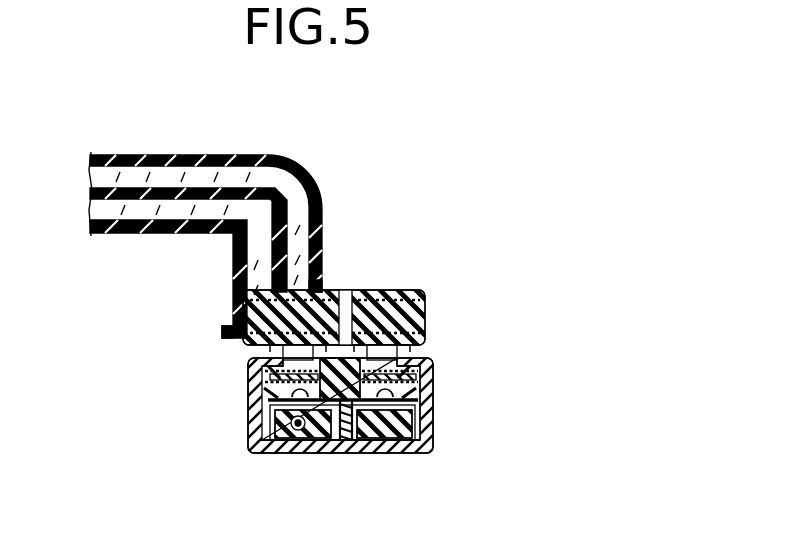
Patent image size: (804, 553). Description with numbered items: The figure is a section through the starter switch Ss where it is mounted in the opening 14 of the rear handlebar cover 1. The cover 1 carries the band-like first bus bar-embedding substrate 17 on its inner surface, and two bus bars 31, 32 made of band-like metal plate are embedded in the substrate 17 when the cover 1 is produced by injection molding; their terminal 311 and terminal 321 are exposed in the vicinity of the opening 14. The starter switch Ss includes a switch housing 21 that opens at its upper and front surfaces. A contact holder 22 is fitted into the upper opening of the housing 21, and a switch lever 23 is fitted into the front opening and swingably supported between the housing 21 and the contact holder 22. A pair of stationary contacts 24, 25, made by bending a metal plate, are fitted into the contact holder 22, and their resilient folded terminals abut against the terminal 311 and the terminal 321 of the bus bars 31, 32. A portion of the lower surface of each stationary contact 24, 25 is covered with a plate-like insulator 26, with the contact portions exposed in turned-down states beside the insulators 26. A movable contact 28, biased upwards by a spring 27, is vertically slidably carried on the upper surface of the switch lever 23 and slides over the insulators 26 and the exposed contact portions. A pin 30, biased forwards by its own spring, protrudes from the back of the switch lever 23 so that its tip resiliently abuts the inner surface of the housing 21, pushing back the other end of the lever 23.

The first bus bar-embedding substrate 17 is at (205, 199).
The bus bar 32 is at (241, 157).
The bus bar 31 is at (160, 226).
The terminal 311 is at (300, 302).
The terminal 321 is at (405, 325).
The rear handlebar cover 1 is at (409, 288).
The opening 14 is at (376, 297).
The contact holder 22 is at (347, 333).
The stationary contact 24 is at (282, 352).
The stationary contact 25 is at (406, 352).
The switch housing 21 is at (382, 441).
The switch lever 23 is at (397, 456).
The plate-like insulator 26 is at (250, 380).
The movable contact 28 is at (262, 406).
The pin 30 is at (300, 453).
The spring 27 is at (343, 453).
The starter switch Ss is at (239, 445).